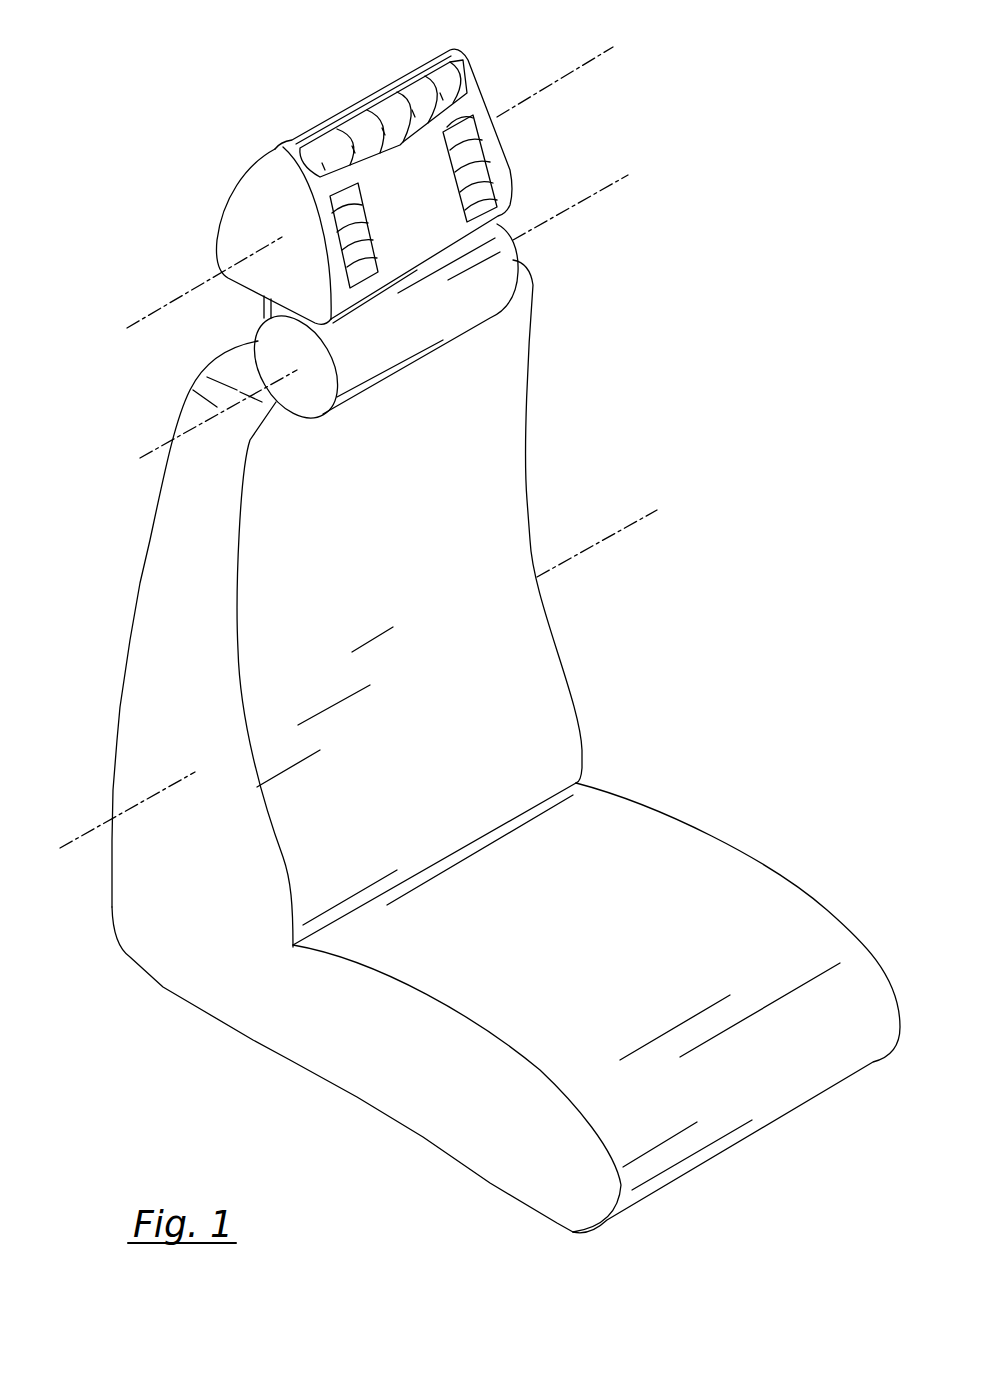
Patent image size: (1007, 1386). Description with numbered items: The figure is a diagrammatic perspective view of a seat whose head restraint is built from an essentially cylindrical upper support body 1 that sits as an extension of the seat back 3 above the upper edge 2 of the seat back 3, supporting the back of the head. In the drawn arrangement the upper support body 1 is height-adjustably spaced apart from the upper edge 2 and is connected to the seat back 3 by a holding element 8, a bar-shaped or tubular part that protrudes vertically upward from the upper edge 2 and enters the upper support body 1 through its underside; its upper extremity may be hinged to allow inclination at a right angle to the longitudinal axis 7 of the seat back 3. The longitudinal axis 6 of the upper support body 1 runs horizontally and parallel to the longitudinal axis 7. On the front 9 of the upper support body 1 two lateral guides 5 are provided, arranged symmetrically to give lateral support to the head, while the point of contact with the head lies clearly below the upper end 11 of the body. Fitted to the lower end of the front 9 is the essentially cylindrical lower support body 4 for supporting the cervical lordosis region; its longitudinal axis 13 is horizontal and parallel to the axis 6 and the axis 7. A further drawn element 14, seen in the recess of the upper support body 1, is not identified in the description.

The upper support body 1 is at (238, 237).
The upper edge of the seat back 2 is at (223, 373).
The seat back 3 is at (188, 880).
The lower support body 4 is at (280, 363).
The lateral guides 5 is at (333, 213).
The longitudinal axis of the upper support body 6 is at (562, 80).
The longitudinal axis of the seat back 7 is at (580, 553).
The holding element 8 is at (263, 307).
The front of the upper support body 9 is at (420, 207).
The upper end of the upper support body 11 is at (310, 125).
The longitudinal axis of the lower support body 13 is at (577, 207).
The roller 14 is at (383, 113).